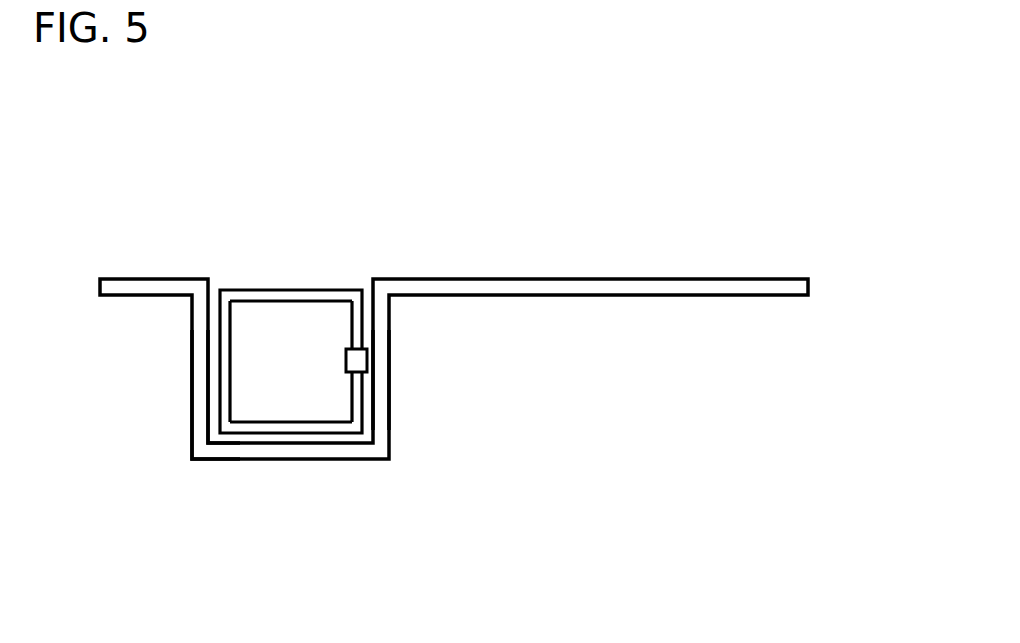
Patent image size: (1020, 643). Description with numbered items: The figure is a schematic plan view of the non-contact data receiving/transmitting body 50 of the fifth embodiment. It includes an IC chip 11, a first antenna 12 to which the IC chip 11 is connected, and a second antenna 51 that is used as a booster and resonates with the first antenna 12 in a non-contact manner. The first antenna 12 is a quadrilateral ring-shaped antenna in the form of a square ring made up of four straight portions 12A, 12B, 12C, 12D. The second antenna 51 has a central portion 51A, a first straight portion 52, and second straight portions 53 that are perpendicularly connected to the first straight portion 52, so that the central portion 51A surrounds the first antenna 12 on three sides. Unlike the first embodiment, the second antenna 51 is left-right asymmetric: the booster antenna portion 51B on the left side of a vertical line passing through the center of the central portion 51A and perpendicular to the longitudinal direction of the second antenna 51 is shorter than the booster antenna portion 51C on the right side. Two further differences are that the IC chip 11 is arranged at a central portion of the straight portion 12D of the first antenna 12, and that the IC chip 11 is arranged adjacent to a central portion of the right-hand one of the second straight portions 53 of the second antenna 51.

The non-contact data receiving/transmitting body 50 is at (658, 160).
The second antenna 51 is at (448, 372).
The central portion 51A is at (193, 482).
The booster antenna portion 51B is at (208, 263).
The booster antenna portion 51C is at (373, 263).
The first straight portion 52 is at (232, 448).
The second straight portions 53 is at (200, 390).
The first antenna 12 is at (308, 318).
The straight portion 12A is at (283, 423).
The straight portion 12B is at (226, 341).
The straight portion 12C is at (292, 295).
The straight portion 12D is at (357, 331).
The IC chip 11 is at (368, 360).